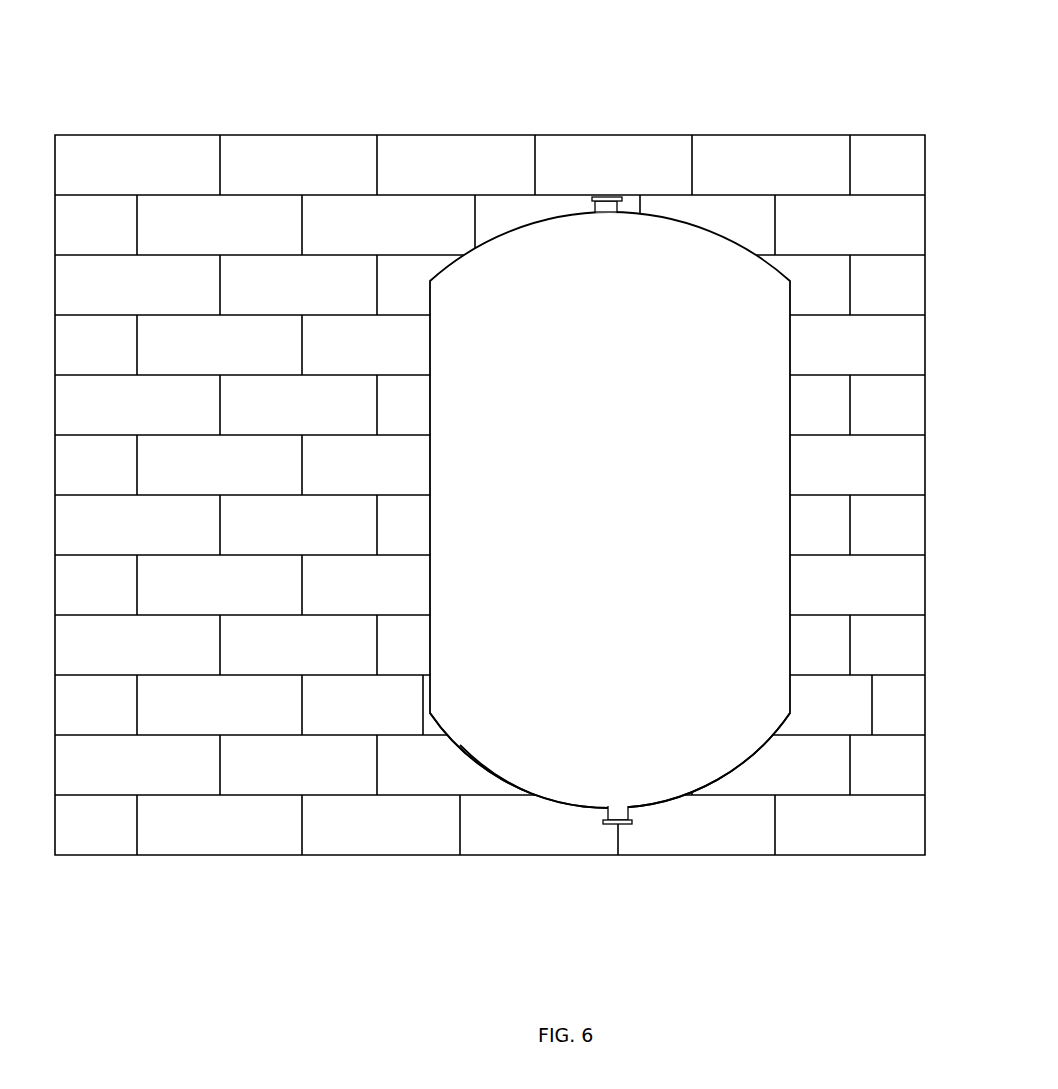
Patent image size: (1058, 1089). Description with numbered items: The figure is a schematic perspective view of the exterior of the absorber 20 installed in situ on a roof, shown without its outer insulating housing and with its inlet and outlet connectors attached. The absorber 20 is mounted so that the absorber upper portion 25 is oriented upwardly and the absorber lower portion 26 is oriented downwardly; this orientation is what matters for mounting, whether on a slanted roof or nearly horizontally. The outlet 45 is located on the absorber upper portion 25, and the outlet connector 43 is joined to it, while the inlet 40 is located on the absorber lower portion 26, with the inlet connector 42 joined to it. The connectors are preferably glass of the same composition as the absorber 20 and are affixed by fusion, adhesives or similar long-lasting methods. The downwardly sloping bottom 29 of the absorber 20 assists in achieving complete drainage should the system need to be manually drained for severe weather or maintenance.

The absorber 20 is at (613, 490).
The absorber upper portion 25 is at (730, 206).
The absorber lower portion 26 is at (519, 777).
The downwardly sloping bottom 29 is at (494, 768).
The inlet 40 is at (618, 807).
The inlet connector 42 is at (637, 815).
The outlet connector 43 is at (618, 196).
The outlet 45 is at (605, 209).